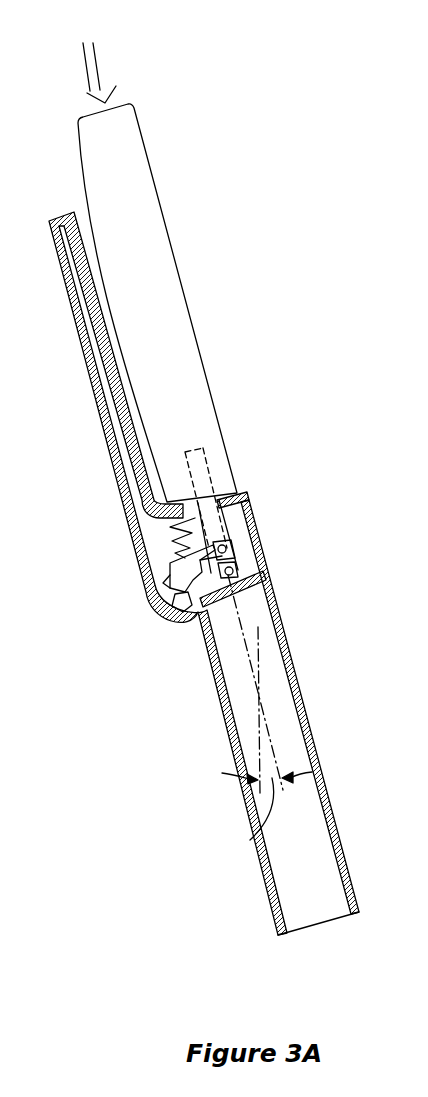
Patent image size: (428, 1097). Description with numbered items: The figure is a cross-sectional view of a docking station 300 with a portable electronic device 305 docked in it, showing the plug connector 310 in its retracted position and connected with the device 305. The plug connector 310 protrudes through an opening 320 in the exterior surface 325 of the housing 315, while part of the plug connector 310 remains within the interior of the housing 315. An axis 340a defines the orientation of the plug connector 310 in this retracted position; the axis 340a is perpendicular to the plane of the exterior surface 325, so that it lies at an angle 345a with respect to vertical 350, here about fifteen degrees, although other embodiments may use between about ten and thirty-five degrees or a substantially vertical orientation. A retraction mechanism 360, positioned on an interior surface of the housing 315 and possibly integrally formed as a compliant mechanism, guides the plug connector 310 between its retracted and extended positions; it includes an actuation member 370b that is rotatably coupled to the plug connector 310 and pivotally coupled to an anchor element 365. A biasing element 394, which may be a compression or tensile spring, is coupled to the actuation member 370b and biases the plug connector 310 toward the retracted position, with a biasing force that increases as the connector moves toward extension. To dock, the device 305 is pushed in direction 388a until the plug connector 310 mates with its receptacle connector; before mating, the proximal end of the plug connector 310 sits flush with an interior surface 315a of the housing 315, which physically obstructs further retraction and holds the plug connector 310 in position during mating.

The docking station 300 is at (217, 489).
The portable electronic device 305 is at (194, 328).
The plug connector 310 is at (214, 522).
The housing 315 is at (293, 662).
The interior surface 315a is at (234, 575).
The opening 320 is at (175, 556).
The exterior surface 325 is at (220, 486).
The axis 340a is at (273, 738).
The angle 345a is at (250, 840).
The vertical 350 is at (260, 738).
The retraction mechanism 360 is at (186, 596).
The anchor element 365 is at (163, 583).
The actuation member 370b is at (235, 596).
The direction 388a is at (103, 62).
The biasing element 394 is at (168, 540).